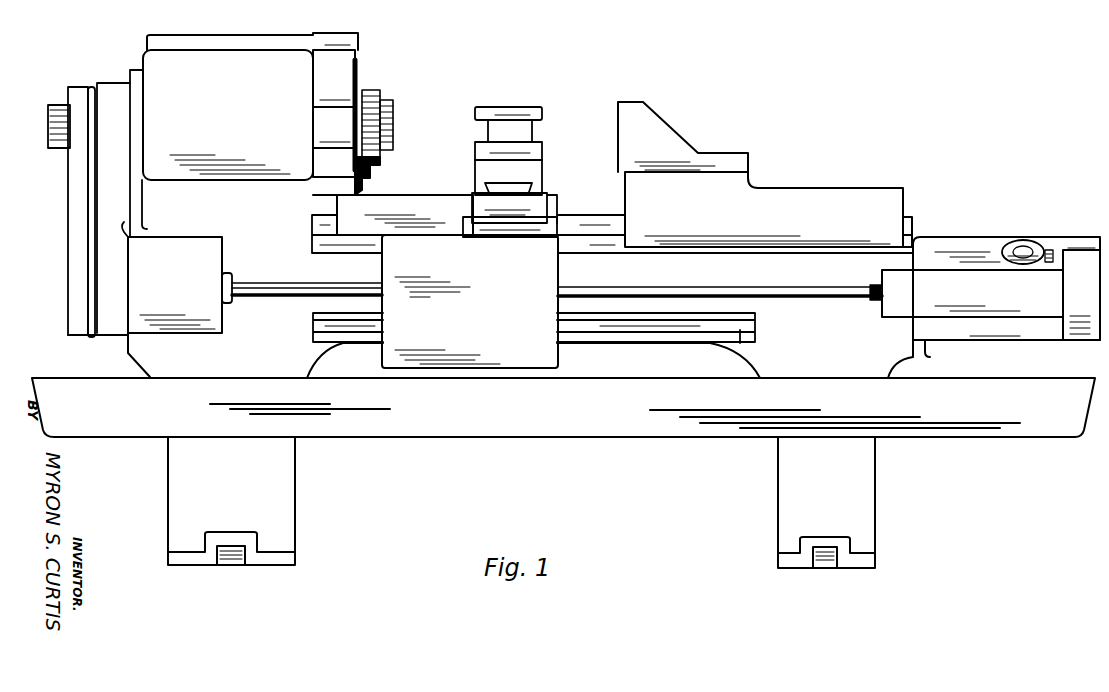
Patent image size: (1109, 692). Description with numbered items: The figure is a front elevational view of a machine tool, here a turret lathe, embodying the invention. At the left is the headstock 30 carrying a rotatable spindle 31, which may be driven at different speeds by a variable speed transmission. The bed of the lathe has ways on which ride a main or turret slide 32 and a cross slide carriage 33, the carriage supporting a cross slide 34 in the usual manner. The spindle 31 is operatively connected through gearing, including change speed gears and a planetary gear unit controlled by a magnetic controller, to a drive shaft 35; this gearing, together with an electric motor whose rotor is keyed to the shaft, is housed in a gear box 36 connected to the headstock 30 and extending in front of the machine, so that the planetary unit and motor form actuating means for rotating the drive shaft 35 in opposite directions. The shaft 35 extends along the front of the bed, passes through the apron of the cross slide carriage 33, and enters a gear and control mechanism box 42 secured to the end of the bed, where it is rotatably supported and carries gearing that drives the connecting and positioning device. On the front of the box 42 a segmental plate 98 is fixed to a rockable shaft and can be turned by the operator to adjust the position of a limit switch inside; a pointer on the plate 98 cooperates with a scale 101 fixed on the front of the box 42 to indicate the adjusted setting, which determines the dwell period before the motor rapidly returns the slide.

The headstock 30 is at (261, 114).
The spindle 31 is at (384, 100).
The turret slide 32 is at (807, 207).
The cross slide carriage 33 is at (430, 207).
The cross slide 34 is at (528, 178).
The drive shaft 35 is at (271, 284).
The gear box 36 is at (170, 285).
The gear and control mechanism box 42 is at (978, 247).
The segmental plate 98 is at (1023, 243).
The scale 101 is at (1049, 255).